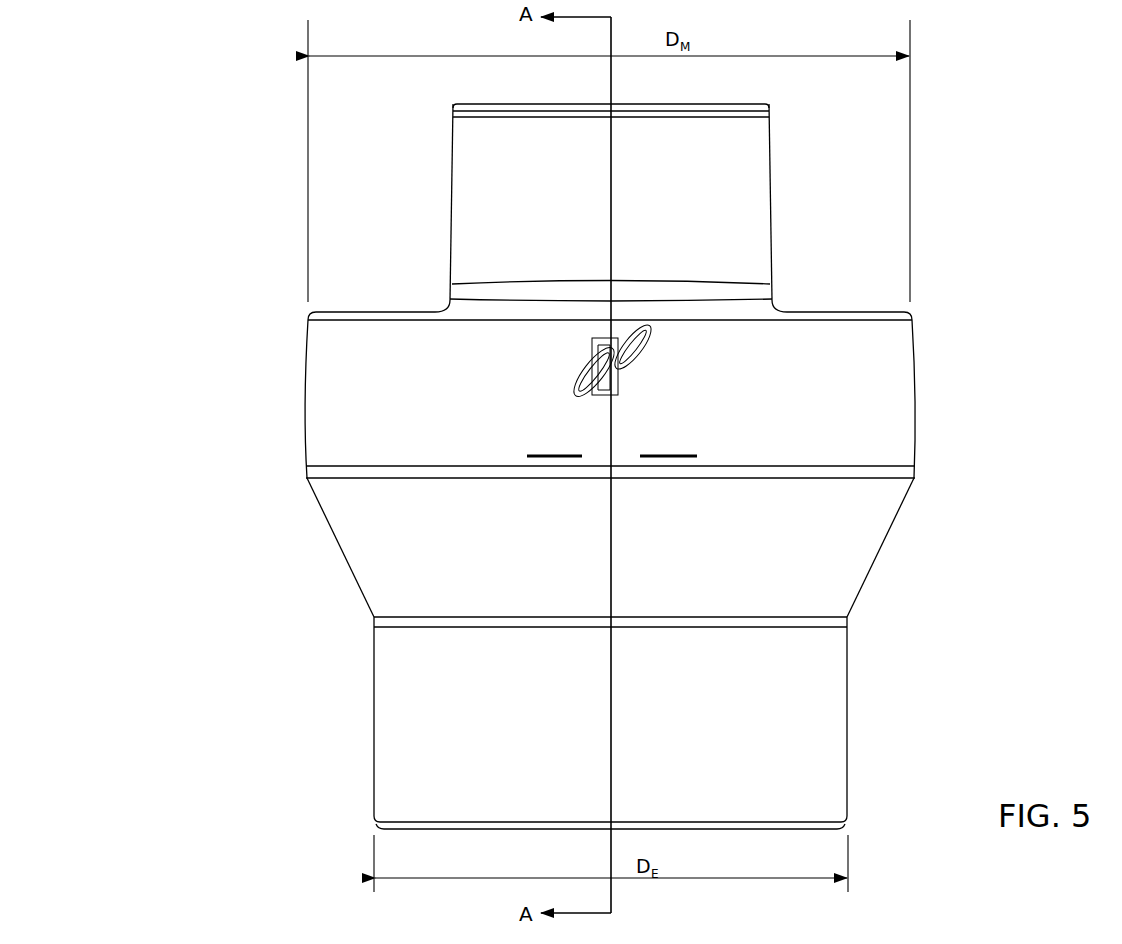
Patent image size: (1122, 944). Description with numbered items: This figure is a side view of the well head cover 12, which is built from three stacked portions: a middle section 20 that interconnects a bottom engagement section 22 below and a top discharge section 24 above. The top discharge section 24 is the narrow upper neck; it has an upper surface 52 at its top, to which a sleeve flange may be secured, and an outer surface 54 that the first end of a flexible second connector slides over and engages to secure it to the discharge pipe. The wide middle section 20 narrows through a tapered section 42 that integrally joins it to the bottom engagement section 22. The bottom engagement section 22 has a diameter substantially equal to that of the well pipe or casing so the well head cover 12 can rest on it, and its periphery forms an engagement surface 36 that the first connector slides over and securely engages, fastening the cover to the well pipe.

The well head cover 12 is at (952, 85).
The middle section 20 is at (306, 398).
The bottom engagement section 22 is at (373, 728).
The top discharge section 24 is at (451, 180).
The engagement surface 36 is at (511, 707).
The tapered section 42 is at (340, 556).
The upper surface 52 is at (770, 104).
The outer surface 54 is at (531, 202).